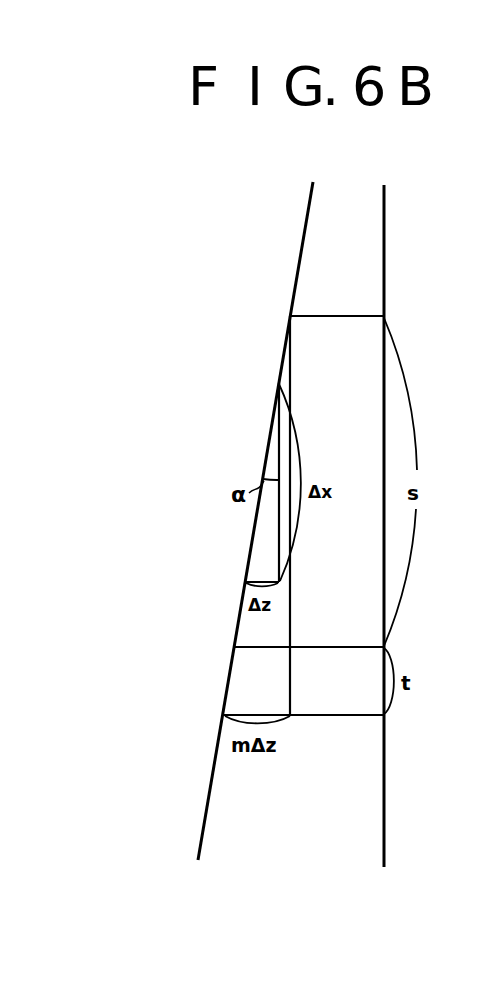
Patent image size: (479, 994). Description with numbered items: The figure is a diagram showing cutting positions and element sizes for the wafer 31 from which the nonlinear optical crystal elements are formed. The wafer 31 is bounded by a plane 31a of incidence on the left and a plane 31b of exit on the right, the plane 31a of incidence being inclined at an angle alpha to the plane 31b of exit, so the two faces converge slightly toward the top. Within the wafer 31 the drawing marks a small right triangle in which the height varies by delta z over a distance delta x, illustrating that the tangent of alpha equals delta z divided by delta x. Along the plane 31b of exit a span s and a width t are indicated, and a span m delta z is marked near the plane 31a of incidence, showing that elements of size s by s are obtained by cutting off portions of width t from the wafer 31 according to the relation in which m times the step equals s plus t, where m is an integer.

The wafer 31 is at (329, 504).
The plane of incidence 31a is at (301, 228).
The plane of exit 31b is at (387, 224).